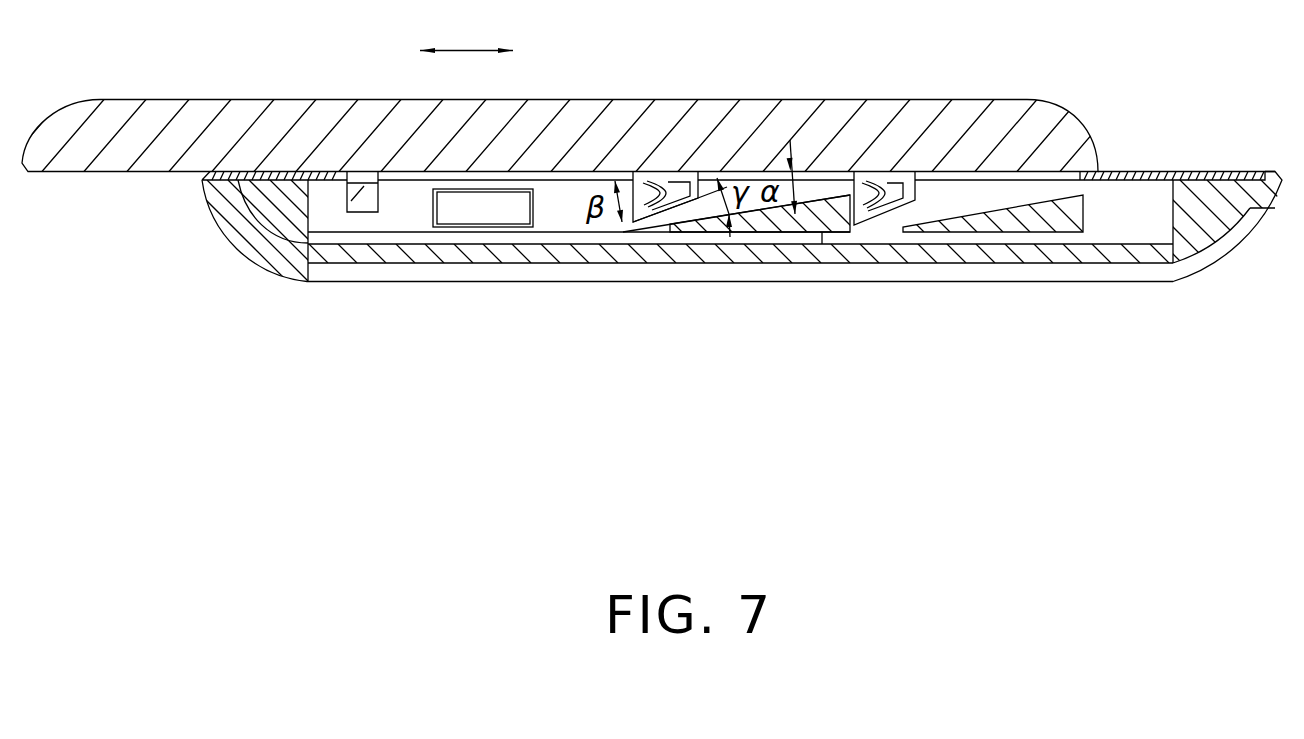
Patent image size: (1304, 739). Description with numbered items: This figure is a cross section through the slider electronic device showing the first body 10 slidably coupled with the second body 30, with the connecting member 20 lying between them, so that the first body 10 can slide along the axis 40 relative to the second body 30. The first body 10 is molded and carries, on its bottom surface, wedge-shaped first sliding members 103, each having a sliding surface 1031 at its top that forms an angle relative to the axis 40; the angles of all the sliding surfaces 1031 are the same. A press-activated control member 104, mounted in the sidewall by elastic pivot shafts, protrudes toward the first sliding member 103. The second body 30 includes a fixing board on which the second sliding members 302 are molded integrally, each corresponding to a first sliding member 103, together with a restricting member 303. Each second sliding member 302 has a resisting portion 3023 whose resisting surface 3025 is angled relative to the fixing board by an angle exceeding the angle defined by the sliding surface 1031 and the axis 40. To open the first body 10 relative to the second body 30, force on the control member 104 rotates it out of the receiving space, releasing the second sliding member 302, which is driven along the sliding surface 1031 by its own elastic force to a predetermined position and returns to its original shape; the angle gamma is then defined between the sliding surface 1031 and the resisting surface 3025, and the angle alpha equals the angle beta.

The first body 10 is at (1210, 228).
The connecting member 20 is at (1188, 177).
The second body 30 is at (1037, 130).
The axis 40 is at (466, 32).
The second sliding member 302 is at (647, 187).
The resisting portion 3023 is at (862, 205).
The resisting surface 3025 is at (662, 237).
The restricting member 303 is at (361, 200).
The control member 104 is at (493, 207).
The first sliding member 103 is at (772, 218).
The sliding surface 1031 is at (812, 187).